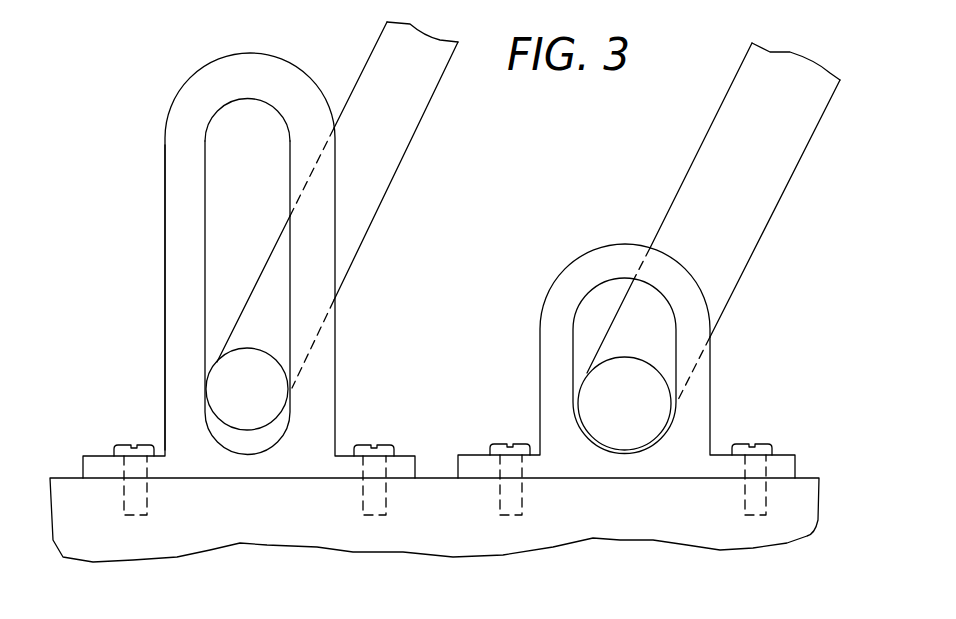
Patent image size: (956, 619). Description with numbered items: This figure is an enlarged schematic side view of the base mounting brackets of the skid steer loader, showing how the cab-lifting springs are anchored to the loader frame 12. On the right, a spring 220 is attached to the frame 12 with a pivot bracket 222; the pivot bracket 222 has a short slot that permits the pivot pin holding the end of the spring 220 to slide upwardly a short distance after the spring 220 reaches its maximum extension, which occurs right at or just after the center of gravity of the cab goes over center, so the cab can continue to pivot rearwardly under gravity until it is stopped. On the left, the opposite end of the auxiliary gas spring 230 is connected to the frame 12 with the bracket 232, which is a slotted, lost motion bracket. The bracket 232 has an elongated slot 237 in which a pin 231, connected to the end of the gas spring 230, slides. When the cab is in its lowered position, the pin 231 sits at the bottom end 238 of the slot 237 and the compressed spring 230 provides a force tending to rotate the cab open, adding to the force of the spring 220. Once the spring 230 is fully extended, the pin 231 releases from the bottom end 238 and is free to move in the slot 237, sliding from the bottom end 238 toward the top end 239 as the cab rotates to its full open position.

The frame 12 is at (563, 527).
The spring 220 is at (730, 82).
The pivot bracket 222 is at (712, 417).
The auxiliary gas spring 230 is at (418, 137).
The pin 231 is at (267, 383).
The bracket 232 is at (165, 334).
The elongated slot 237 is at (233, 222).
The bottom end 238 is at (243, 456).
The top end 239 is at (250, 99).